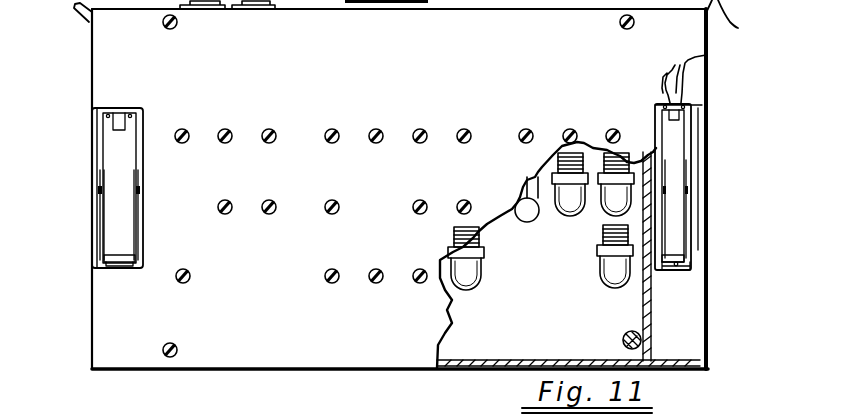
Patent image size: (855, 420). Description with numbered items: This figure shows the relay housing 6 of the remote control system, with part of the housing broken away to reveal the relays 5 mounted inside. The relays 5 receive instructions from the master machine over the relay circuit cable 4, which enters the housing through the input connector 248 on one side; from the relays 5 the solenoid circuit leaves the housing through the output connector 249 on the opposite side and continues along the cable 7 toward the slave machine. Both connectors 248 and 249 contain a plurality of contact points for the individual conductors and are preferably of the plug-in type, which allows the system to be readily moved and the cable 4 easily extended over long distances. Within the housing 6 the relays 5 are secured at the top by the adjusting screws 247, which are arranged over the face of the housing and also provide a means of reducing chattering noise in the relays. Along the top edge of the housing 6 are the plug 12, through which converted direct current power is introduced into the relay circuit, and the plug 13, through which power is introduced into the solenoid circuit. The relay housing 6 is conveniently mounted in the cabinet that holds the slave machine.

The relay circuit cable 4 is at (726, 21).
The relays 5 is at (598, 266).
The relay housing 6 is at (347, 372).
The cable 7 is at (83, 21).
The plug 12 is at (263, 4).
The plug 13 is at (208, 4).
The adjusting screws 247 is at (417, 199).
The input connector 248 is at (682, 165).
The output connector 249 is at (116, 168).